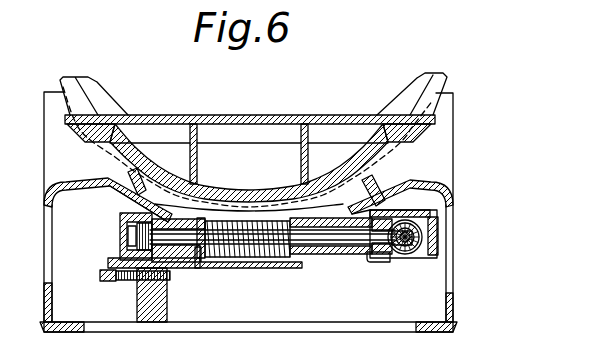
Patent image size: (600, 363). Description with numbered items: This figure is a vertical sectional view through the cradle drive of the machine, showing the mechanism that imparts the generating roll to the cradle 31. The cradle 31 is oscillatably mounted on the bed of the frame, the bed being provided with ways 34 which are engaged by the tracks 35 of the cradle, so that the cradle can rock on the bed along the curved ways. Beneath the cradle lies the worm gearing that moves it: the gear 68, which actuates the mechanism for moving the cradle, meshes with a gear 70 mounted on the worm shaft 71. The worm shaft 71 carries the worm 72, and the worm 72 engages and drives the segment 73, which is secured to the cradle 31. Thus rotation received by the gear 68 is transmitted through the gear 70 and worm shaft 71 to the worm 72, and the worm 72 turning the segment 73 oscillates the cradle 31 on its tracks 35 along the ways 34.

The cradle 31 is at (338, 114).
The ways 34 is at (433, 100).
The tracks 35 is at (443, 80).
The gear 68 is at (408, 253).
The gear 70 is at (384, 254).
The worm shaft 71 is at (340, 238).
The worm 72 is at (268, 250).
The segment 73 is at (374, 180).